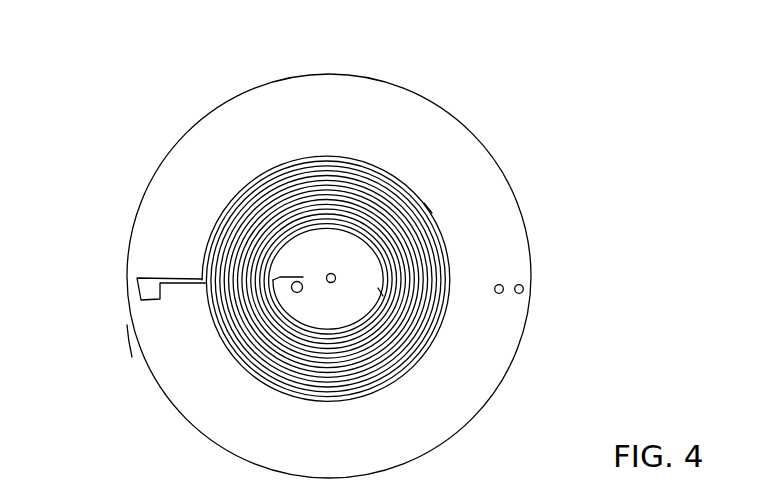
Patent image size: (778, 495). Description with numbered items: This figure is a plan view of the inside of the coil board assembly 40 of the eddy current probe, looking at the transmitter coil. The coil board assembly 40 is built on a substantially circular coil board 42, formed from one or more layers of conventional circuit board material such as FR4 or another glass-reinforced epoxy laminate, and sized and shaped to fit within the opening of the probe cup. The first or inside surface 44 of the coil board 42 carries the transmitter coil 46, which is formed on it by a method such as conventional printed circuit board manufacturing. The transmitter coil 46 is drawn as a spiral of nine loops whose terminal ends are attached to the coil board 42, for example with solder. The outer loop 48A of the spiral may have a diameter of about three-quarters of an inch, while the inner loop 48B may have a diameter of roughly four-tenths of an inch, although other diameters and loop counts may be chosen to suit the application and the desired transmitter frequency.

The coil board assembly 40 is at (83, 198).
The coil board 42 is at (208, 111).
The inside surface 44 is at (148, 343).
The transmitter coil 46 is at (337, 157).
The outer loop 48A is at (428, 208).
The inner loop 48B is at (380, 291).